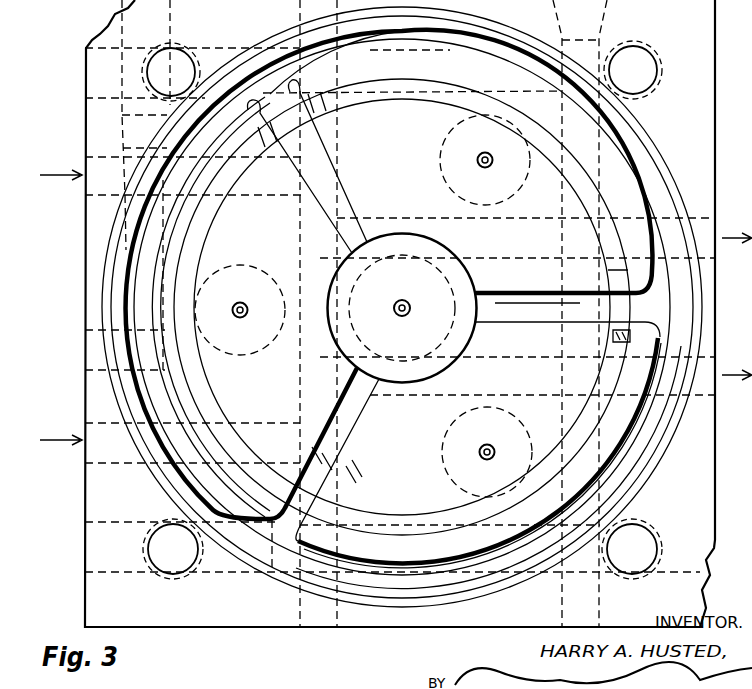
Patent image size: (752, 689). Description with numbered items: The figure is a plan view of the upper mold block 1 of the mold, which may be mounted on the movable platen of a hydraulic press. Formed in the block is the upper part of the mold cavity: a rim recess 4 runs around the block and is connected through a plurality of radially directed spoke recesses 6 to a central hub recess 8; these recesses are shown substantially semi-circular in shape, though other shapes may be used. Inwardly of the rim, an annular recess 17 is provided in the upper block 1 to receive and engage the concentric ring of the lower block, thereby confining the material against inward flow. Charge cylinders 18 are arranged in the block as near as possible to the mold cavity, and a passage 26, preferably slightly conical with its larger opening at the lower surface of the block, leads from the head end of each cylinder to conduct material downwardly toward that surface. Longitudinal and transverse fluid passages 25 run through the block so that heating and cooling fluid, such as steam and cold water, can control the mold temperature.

The upper mold block 1 is at (703, 81).
The rim recess 4 is at (682, 276).
The spoke recesses 6 is at (347, 195).
The central hub recess 8 is at (423, 370).
The annular recess 17 is at (213, 226).
The charge cylinders 18 is at (363, 306).
The fluid passages 25 is at (100, 468).
The passage 26 is at (478, 160).